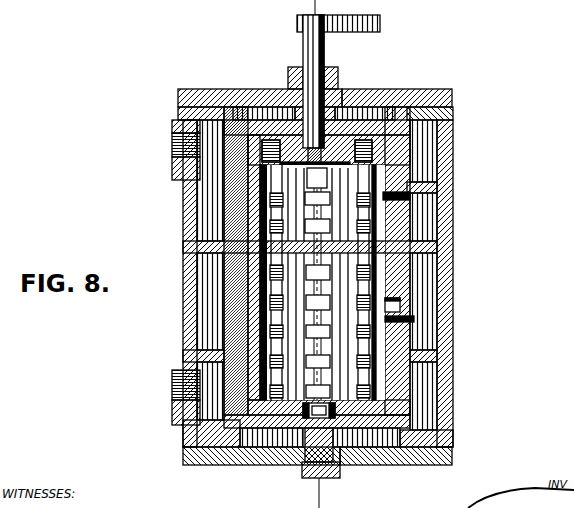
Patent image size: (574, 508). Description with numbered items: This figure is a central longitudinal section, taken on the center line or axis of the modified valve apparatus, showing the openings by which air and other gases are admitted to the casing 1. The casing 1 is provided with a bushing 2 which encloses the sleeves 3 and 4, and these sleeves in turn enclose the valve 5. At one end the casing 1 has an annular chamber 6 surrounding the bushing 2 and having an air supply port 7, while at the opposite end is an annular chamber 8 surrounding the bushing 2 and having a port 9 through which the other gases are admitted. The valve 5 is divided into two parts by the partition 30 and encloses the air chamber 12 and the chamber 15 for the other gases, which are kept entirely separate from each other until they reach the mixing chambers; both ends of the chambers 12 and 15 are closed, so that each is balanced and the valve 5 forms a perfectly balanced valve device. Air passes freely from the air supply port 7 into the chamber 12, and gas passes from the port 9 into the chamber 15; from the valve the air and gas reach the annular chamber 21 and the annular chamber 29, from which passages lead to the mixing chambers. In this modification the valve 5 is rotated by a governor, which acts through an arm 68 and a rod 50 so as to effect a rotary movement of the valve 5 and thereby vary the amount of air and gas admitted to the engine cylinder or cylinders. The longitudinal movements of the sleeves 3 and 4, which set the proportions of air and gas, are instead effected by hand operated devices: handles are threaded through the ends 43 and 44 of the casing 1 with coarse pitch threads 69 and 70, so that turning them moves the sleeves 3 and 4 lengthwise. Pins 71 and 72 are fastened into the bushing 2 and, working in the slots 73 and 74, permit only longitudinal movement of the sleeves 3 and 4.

The casing 1 is at (453, 208).
The bushing 2 is at (440, 249).
The sleeve 3 is at (374, 463).
The sleeve 4 is at (372, 90).
The valve 5 is at (397, 290).
The annular chamber 6 is at (430, 389).
The air supply port 7 is at (176, 408).
The annular chamber 8 is at (448, 150).
The port 9 is at (176, 157).
The air chamber 12 is at (306, 366).
The chamber 15 is at (321, 230).
The annular chamber 21 is at (200, 313).
The annular chamber 29 is at (212, 217).
The partition 30 is at (262, 257).
The end of casing 43 is at (252, 465).
The end of casing 44 is at (240, 92).
The rod 50 is at (304, 52).
The arm 68 is at (381, 21).
The coarse pitch thread 69 is at (300, 466).
The coarse pitch thread 70 is at (338, 86).
The pin 71 is at (414, 320).
The pin 72 is at (443, 184).
The slot 73 is at (400, 307).
The slot 74 is at (430, 211).